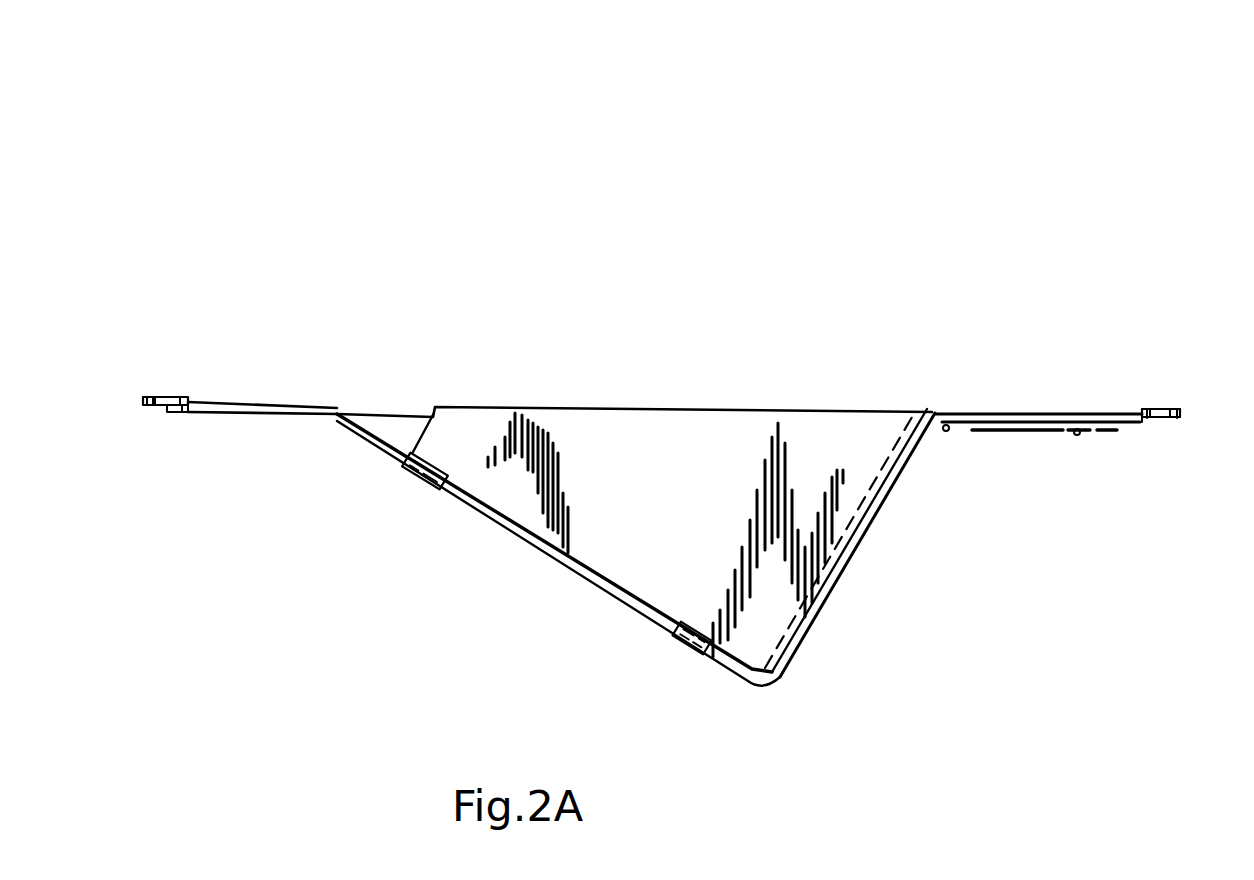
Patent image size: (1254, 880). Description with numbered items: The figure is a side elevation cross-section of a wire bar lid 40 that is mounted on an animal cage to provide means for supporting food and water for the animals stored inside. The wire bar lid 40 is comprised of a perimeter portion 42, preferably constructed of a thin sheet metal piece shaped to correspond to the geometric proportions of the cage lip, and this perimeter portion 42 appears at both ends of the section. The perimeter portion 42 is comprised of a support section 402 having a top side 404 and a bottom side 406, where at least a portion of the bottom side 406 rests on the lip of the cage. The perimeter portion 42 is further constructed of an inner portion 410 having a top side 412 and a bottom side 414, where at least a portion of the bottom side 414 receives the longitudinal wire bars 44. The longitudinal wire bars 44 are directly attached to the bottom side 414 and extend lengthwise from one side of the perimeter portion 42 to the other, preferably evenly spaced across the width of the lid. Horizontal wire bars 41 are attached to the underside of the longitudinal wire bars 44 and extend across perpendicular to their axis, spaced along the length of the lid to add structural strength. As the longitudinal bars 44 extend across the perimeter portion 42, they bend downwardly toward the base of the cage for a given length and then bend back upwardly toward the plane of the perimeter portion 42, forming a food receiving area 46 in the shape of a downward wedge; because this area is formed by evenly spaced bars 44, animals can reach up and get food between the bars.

The wire bar lid 40 is at (674, 292).
The horizontal wire bars 41 is at (947, 413).
The perimeter portion 42 is at (147, 398).
The longitudinal wire bars 44 is at (337, 409).
The food receiving area 46 is at (690, 535).
The support section 402 is at (147, 402).
The top side 404 is at (158, 398).
The bottom side 406 is at (153, 404).
The inner portion 410 is at (197, 402).
The top side 412 is at (185, 397).
The bottom side 414 is at (182, 410).